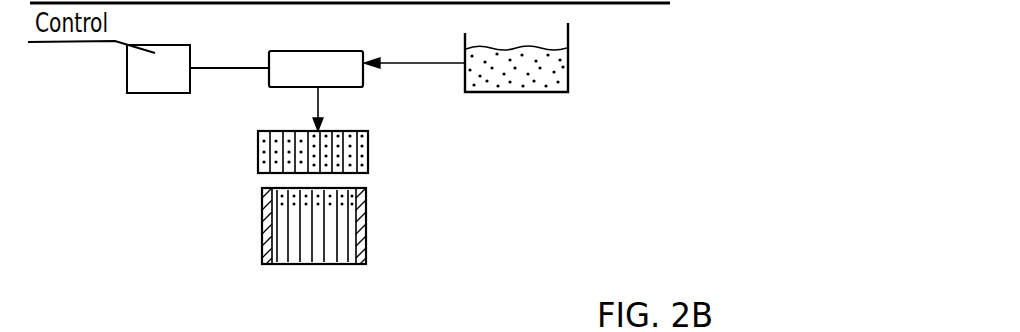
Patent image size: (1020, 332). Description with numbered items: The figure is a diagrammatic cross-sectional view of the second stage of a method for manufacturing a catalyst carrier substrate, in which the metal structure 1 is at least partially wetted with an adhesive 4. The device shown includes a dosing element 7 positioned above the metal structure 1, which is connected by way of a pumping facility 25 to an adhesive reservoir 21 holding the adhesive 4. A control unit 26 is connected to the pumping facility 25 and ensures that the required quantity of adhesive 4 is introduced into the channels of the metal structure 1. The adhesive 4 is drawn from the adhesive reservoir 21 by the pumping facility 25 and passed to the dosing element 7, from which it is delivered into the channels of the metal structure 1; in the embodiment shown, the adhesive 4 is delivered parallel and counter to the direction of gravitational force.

The metal structure 1 is at (281, 229).
The adhesive 4 is at (553, 72).
The dosing element 7 is at (262, 145).
The adhesive reservoir 21 is at (515, 92).
The pumping facility 25 is at (340, 80).
The control unit 26 is at (143, 65).